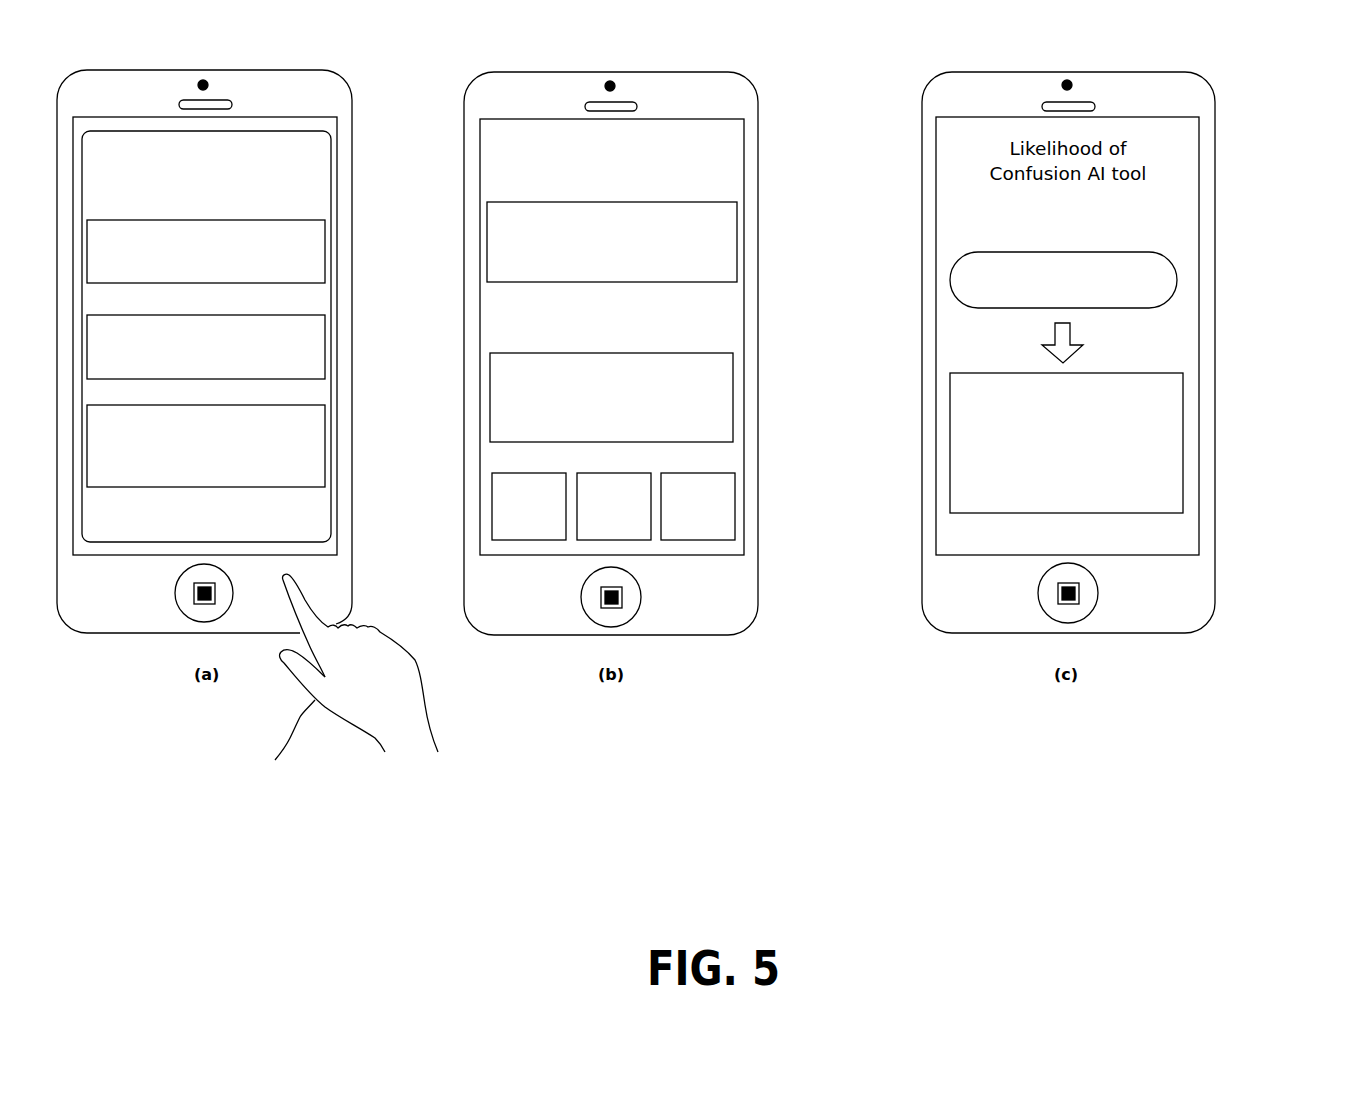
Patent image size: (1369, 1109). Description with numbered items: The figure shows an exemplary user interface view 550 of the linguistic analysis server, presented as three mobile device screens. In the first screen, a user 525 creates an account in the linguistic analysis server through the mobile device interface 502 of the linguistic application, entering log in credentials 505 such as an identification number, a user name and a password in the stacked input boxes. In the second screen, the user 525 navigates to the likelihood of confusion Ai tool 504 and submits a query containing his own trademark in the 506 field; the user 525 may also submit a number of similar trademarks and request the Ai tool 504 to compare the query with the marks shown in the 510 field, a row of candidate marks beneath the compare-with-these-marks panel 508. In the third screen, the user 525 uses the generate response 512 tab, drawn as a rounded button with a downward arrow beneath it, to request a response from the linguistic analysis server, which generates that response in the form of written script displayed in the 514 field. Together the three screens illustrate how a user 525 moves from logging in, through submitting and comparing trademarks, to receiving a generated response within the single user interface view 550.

The mobile device interface 502 is at (288, 157).
The log in credentials 505 is at (317, 428).
The likelihood of confusion Ai tool 504 is at (730, 127).
The trademark query field 506 is at (722, 262).
The compare with these marks field 508 is at (717, 368).
The comparison field 510 is at (728, 483).
The generate response tab 512 is at (1148, 293).
The response field 514 is at (1167, 473).
The user 525 is at (324, 682).
The user interface view 550 is at (1180, 867).